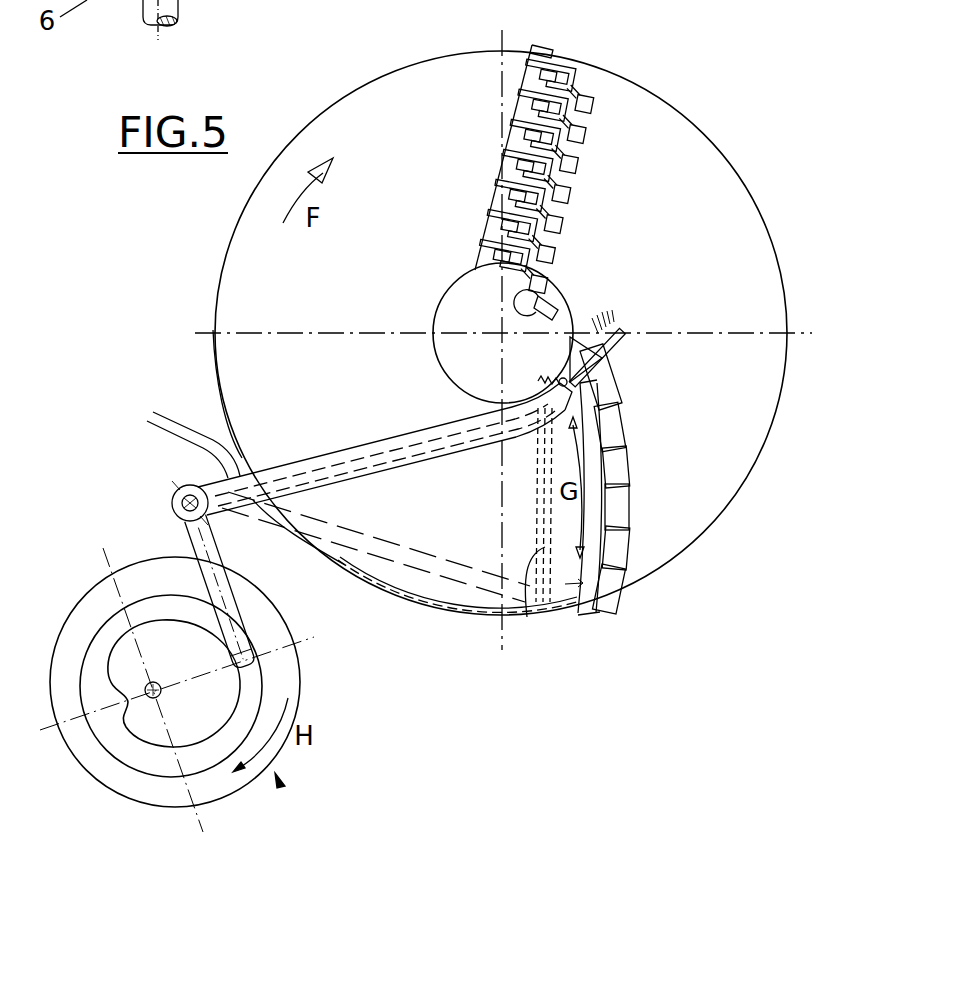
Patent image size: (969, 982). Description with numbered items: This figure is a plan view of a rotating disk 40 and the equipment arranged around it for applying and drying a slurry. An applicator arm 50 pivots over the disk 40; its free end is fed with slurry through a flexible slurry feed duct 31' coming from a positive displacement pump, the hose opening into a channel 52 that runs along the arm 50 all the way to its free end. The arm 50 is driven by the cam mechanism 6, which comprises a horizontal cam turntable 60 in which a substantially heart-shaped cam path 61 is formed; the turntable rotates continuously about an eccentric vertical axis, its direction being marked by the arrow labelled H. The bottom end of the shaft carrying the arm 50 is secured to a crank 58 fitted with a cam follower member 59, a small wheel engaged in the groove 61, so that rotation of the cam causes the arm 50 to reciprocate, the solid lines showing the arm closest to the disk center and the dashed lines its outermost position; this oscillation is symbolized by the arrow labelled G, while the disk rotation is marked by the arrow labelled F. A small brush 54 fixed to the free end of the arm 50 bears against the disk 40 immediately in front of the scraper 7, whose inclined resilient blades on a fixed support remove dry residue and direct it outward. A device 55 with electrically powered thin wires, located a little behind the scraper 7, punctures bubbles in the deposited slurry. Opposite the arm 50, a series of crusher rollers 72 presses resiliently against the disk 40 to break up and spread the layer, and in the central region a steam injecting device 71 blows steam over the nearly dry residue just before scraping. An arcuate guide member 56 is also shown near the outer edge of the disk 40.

The cam mechanism 6 is at (280, 780).
The scraper 7 is at (620, 508).
The slurry feed duct 31' is at (162, 442).
The disk 40 is at (705, 180).
The arm 50 is at (310, 457).
The channel 52 is at (377, 455).
The brush 54 is at (610, 318).
The bubble puncturing device 55 is at (527, 617).
The arcuate guide 56 is at (467, 620).
The crank 58 is at (188, 548).
The cam follower member 59 is at (262, 674).
The cam turntable 60 is at (73, 632).
The cam path 61 is at (143, 772).
The steam injecting device 71 is at (533, 303).
The crusher rollers 72 is at (588, 142).